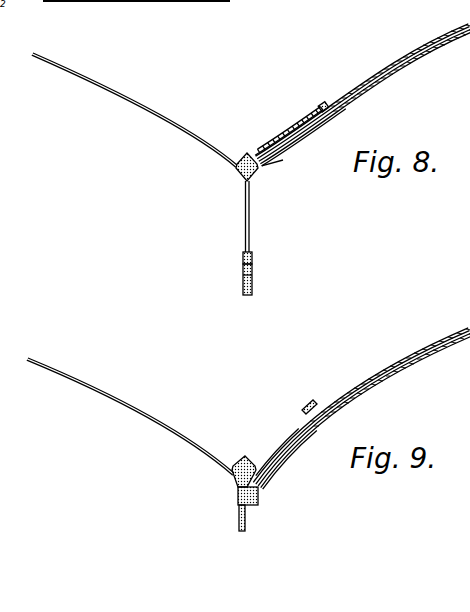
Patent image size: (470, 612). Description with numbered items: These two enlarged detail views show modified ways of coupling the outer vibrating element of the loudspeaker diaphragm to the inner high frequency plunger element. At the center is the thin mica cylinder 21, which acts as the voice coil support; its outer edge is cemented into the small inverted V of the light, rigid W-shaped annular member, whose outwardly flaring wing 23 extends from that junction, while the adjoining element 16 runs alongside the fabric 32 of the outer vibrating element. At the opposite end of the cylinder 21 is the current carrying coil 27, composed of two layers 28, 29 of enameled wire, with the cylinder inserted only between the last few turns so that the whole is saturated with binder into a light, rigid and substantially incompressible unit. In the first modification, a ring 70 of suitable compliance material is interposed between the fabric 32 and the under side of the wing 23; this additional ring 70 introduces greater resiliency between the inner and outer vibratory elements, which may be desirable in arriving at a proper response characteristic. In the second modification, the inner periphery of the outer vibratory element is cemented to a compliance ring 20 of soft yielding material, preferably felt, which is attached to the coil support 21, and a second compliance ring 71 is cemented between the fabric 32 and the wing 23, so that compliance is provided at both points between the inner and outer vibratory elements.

In FIG. 8, the rib 16 is at (345, 105).
In FIG. 8, the fabric 32 is at (422, 50).
In FIG. 9, the fabric 32 is at (437, 352).
In FIG. 8, the wing 23 is at (283, 143).
In FIG. 9, the wing 23 is at (290, 430).
In FIG. 8, the ring 70 is at (330, 102).
In FIG. 9, the second compliance ring 71 is at (318, 404).
In FIG. 8, the mica cylinder 21 is at (252, 220).
In FIG. 9, the mica cylinder 21 is at (240, 513).
In FIG. 8, the current carrying coil 27 is at (259, 252).
In FIG. 8, the layer 28 is at (252, 280).
In FIG. 8, the layer 29 is at (247, 278).
In FIG. 9, the compliance ring 20 is at (258, 496).